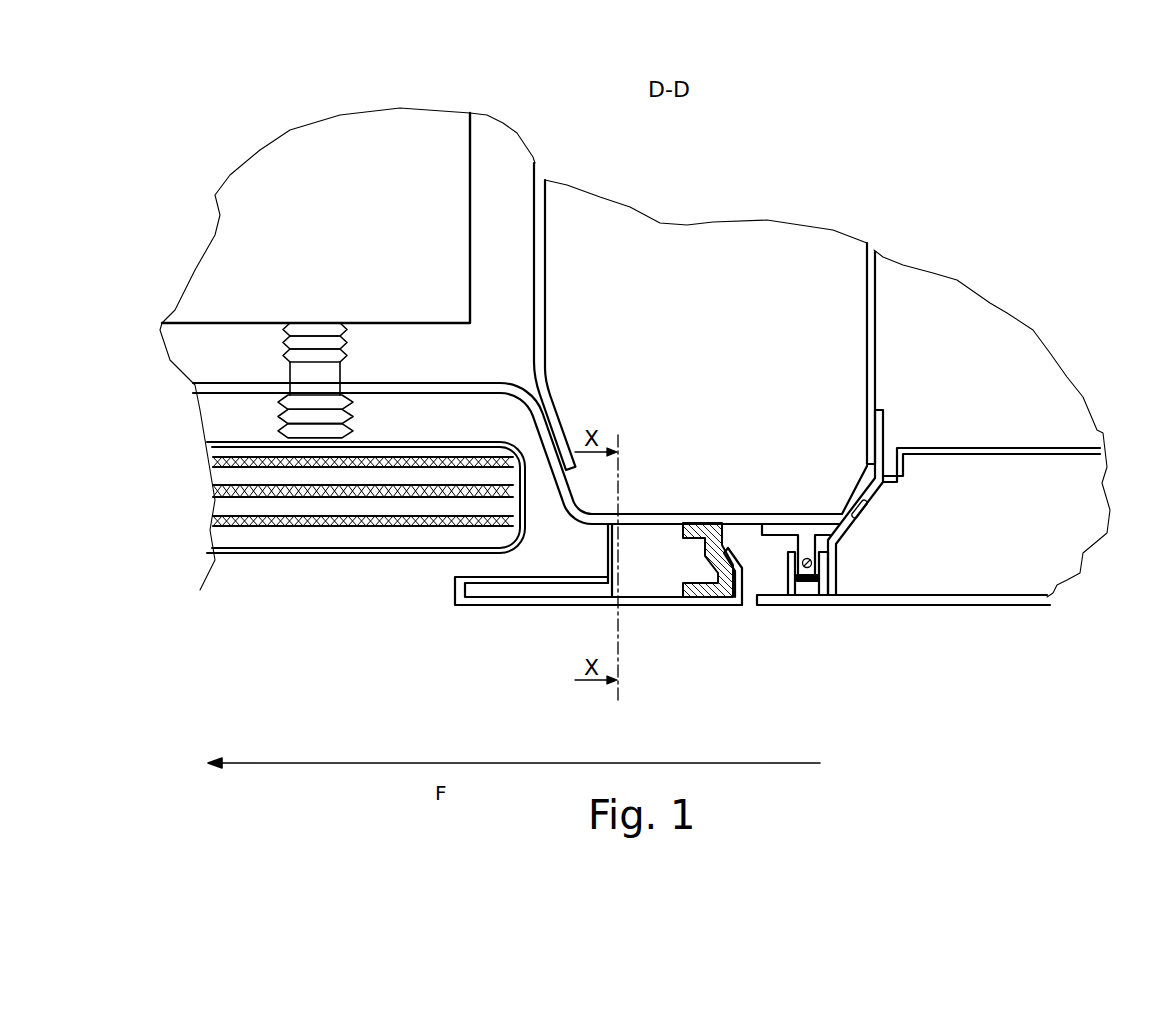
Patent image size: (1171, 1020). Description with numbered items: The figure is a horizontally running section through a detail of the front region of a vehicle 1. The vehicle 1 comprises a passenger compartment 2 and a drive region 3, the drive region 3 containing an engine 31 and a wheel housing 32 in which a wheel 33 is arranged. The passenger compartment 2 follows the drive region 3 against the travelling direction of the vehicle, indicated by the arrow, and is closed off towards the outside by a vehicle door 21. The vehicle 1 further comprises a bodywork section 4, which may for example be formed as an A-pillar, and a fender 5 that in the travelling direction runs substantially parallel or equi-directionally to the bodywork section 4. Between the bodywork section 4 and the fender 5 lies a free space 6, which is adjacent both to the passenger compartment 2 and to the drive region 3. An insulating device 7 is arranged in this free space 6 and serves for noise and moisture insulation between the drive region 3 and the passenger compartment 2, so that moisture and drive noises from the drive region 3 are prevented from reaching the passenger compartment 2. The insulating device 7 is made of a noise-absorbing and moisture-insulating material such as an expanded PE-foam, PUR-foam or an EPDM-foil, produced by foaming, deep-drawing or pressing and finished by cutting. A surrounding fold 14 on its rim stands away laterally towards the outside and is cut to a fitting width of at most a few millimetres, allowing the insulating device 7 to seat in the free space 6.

The vehicle 1 is at (1005, 256).
The passenger compartment 2 is at (1049, 383).
The drive region 3 is at (678, 316).
The engine 31 is at (226, 249).
The wheel housing 32 is at (442, 383).
The wheel 33 is at (333, 540).
The bodywork section 4 is at (770, 518).
The fender 5 is at (521, 598).
The free space 6 is at (690, 572).
The insulating device 7 is at (724, 594).
The fold 14 is at (677, 524).
The vehicle door 21 is at (993, 578).